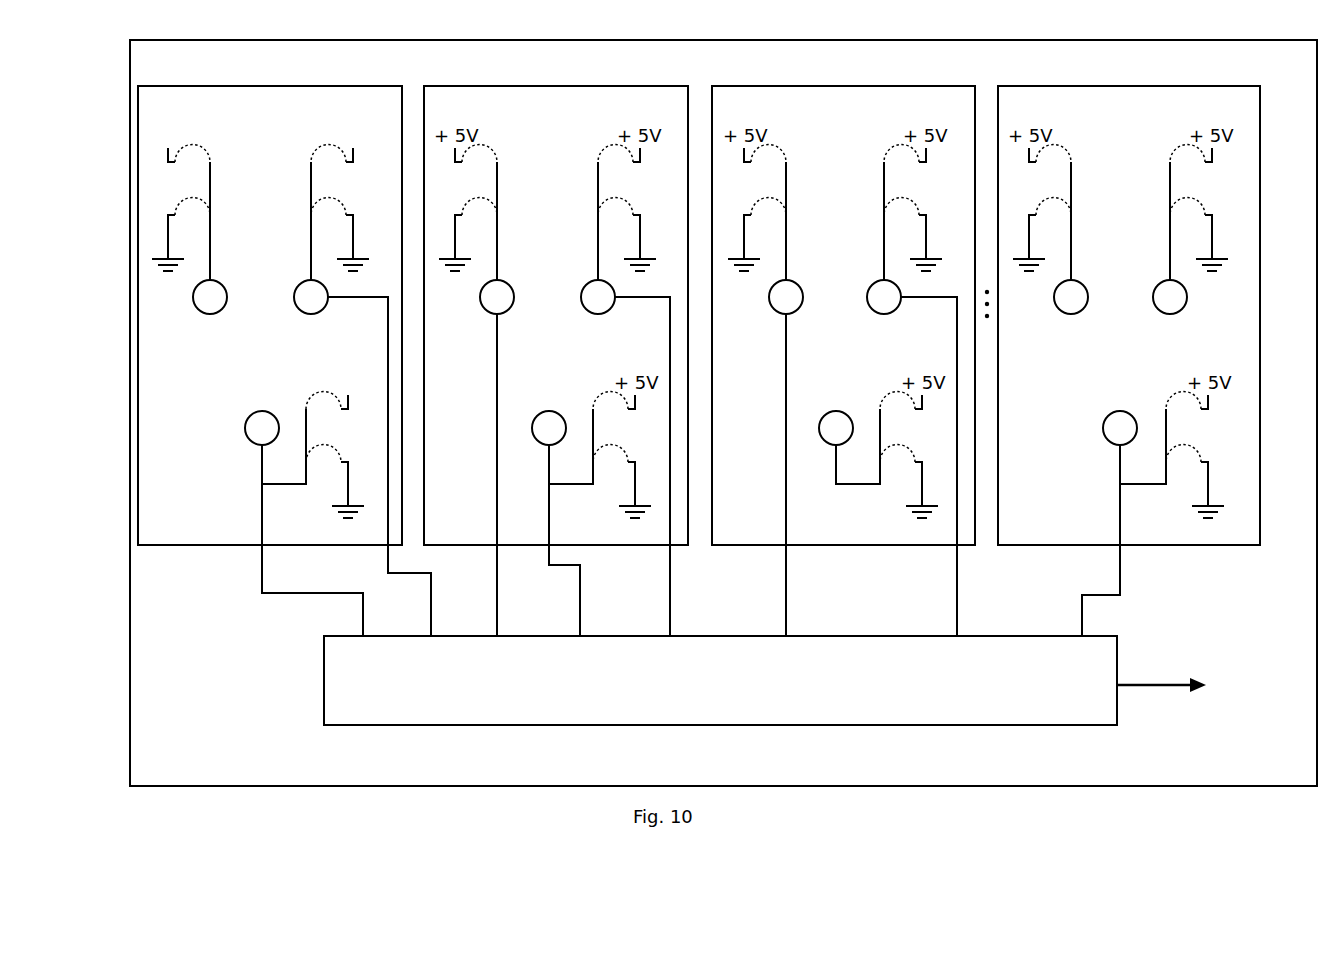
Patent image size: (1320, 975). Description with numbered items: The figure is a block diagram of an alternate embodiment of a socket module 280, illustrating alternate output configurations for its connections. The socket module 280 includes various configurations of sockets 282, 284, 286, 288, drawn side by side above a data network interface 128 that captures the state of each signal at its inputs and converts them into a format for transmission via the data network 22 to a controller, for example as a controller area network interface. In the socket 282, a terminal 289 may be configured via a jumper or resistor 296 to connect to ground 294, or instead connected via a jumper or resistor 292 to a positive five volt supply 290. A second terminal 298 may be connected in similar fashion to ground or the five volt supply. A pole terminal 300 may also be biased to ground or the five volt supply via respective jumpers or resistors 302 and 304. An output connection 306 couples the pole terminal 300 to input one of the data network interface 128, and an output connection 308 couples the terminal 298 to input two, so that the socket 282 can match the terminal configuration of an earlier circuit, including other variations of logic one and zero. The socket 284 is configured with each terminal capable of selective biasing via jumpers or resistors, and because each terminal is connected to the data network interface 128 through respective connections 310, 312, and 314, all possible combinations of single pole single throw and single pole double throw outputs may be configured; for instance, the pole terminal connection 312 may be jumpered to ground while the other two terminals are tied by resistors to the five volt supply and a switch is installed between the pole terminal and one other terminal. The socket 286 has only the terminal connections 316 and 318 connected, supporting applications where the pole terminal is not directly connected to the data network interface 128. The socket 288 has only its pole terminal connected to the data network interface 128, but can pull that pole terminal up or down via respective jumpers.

The socket module 280 is at (1005, 40).
The socket 282 is at (333, 86).
The socket 284 is at (608, 86).
The socket 286 is at (888, 86).
The socket 288 is at (1170, 86).
The +5V supply 290 is at (175, 123).
The jumper or resistor 292 is at (202, 152).
The jumper or resistor 296 is at (178, 195).
The ground 294 is at (158, 258).
The terminal 289 is at (213, 315).
The second terminal 298 is at (311, 315).
The pole terminal 300 is at (250, 414).
The jumper or resistor 302 is at (330, 452).
The jumper or resistor 304 is at (318, 396).
The output connection 306 is at (330, 597).
The output connection 308 is at (385, 558).
The connection 310 is at (498, 585).
The pole terminal connection 312 is at (578, 600).
The connection 314 is at (668, 585).
The terminal connection 316 is at (786, 573).
The terminal connection 318 is at (956, 573).
The data network interface 128 is at (472, 725).
The data network 22 is at (1172, 685).